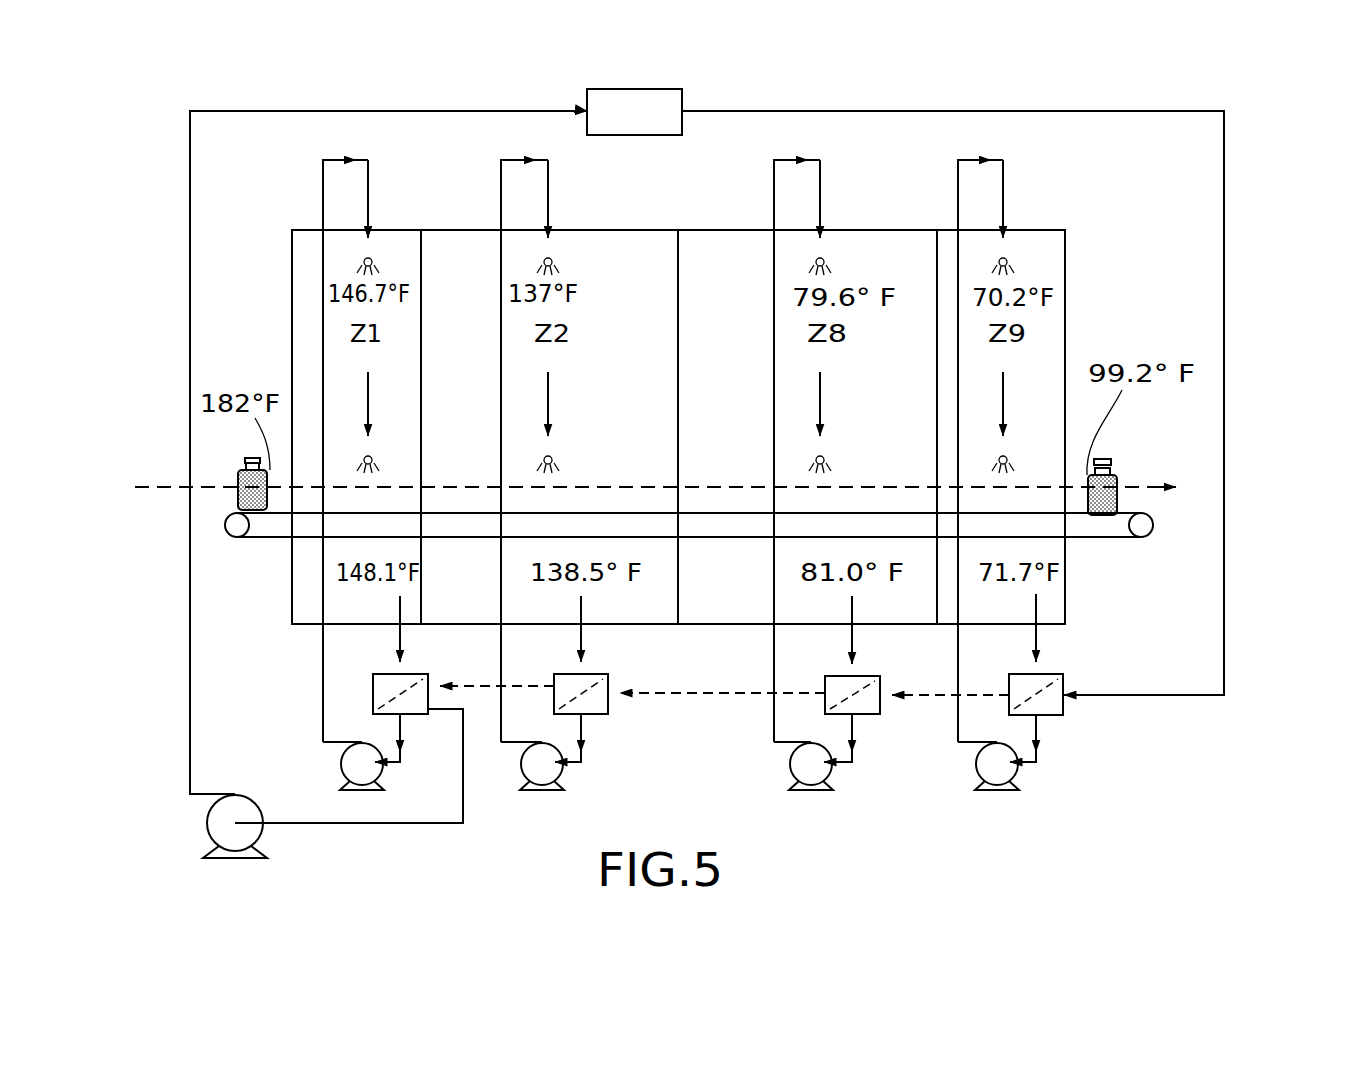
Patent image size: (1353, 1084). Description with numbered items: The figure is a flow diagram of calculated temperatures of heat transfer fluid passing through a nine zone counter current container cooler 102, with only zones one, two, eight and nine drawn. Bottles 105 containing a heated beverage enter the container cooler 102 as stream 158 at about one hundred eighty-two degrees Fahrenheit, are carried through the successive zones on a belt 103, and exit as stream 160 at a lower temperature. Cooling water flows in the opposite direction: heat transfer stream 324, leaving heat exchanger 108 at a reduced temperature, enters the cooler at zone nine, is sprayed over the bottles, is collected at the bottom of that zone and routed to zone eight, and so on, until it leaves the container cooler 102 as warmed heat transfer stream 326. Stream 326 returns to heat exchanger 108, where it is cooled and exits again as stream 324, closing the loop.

The container cooler 102 is at (1065, 270).
The conveyor 103 is at (273, 538).
The bottles 105 is at (240, 470).
The heat exchanger 108 is at (652, 125).
The stream 158 is at (145, 488).
The stream 160 is at (1147, 478).
The heat transfer stream 324 is at (1224, 225).
The heat transfer stream 326 is at (190, 275).